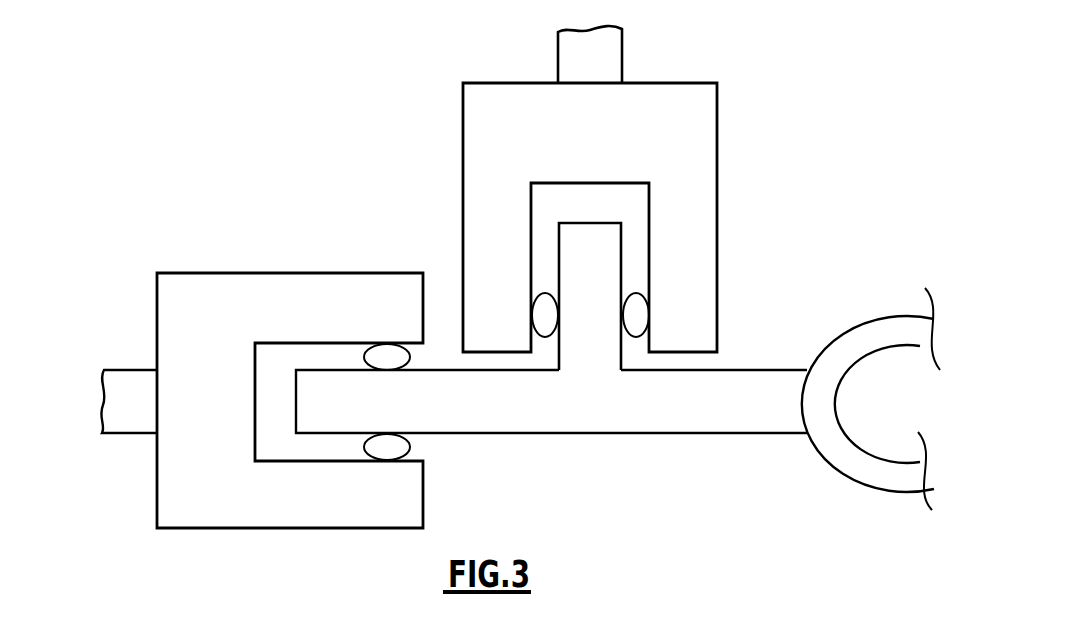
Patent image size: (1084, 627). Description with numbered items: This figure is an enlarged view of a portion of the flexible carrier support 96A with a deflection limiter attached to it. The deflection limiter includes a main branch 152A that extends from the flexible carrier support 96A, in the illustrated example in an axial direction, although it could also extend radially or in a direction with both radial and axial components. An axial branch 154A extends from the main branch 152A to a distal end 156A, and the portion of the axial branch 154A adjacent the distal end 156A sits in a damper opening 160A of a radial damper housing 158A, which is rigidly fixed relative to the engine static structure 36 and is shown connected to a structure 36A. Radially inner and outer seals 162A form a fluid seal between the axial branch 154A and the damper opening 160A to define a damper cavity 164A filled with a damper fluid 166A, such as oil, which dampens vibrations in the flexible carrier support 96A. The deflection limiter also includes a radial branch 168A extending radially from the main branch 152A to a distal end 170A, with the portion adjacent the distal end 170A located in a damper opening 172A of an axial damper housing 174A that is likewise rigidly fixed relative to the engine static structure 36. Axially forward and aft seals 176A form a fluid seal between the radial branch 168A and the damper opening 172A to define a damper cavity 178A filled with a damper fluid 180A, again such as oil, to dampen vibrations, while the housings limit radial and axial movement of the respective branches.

The engine static structure 36 is at (607, 67).
The conduit 36A is at (125, 387).
The flexible carrier support 96A is at (882, 472).
The main branch 152A is at (680, 430).
The axial branch 154A is at (443, 413).
The distal end 156A is at (295, 424).
The radial damper housing 158A is at (280, 520).
The damper opening 160A is at (426, 450).
The radially inner and outer seals 162A is at (388, 357).
The damper cavity 164A is at (278, 375).
The damper fluid 166A is at (268, 412).
The radial branch 168A is at (608, 352).
The distal end 170A is at (602, 223).
The damper opening 172A is at (543, 343).
The axial damper housing 174A is at (704, 110).
The axially forward and aft seals 176A is at (638, 315).
The damper cavity 178A is at (636, 255).
The damper fluid 180A is at (560, 197).